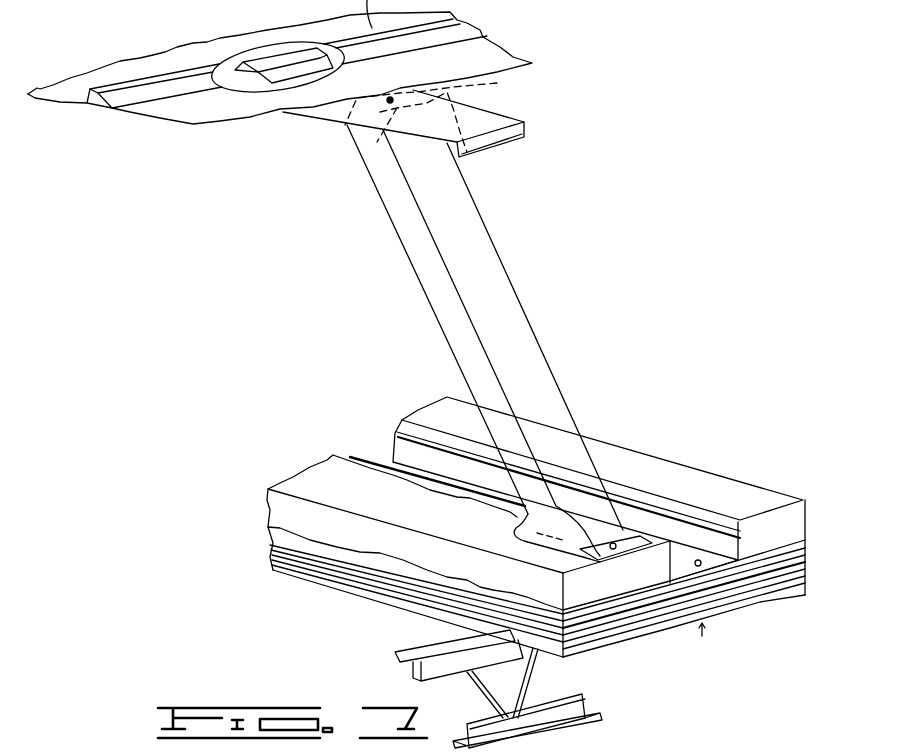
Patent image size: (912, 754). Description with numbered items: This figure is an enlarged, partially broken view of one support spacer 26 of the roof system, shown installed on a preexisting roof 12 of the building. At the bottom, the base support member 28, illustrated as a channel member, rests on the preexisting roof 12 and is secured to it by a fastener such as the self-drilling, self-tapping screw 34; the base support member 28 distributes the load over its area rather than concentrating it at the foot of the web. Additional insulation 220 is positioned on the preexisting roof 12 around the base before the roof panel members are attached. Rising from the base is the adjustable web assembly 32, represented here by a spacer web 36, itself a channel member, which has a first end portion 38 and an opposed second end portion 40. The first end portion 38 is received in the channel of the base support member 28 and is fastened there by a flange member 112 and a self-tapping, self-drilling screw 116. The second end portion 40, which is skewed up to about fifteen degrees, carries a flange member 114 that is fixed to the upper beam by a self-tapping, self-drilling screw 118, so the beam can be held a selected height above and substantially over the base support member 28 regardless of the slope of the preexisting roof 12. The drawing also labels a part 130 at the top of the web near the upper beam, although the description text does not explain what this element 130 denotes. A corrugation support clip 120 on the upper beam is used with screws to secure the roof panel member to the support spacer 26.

The preexisting roof 12 is at (298, 556).
The support spacer 26 is at (529, 124).
The base support member 28 is at (662, 523).
The adjustable web assembly 32 is at (513, 295).
The self-drilling, self-tapping screw 34 is at (702, 565).
The spacer web 36 is at (433, 307).
The first end portion 38 is at (595, 520).
The second end portion 40 is at (377, 142).
The flange member 112 is at (630, 542).
The flange member 114 is at (437, 96).
The self-tapping, self-drilling screw 116 is at (613, 549).
The self-tapping, self-drilling screw 118 is at (390, 93).
The corrugation support clip 120 is at (265, 52).
The bracket plate 130 is at (490, 120).
The insulation 220 is at (297, 507).